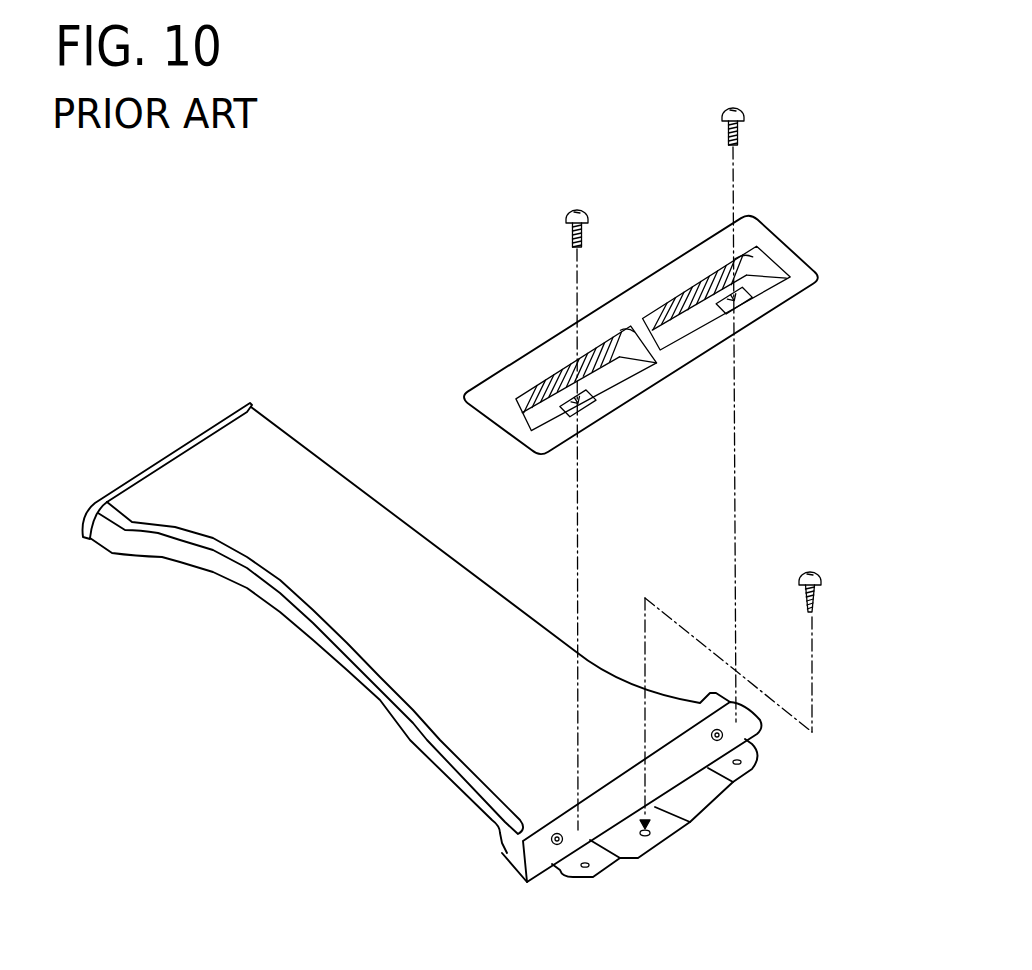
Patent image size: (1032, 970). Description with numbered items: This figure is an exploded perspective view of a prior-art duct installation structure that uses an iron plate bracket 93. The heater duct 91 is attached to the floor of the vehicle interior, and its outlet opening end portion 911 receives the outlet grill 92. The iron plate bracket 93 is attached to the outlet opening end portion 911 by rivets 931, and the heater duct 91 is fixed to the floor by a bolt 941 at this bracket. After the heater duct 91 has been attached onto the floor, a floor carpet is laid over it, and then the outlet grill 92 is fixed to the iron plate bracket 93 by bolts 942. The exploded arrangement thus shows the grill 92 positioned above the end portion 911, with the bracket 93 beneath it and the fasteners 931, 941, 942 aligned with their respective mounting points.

The heater duct 91 is at (368, 607).
The outlet opening end portion 911 is at (615, 793).
The outlet grill 92 is at (533, 372).
The iron plate bracket 93 is at (697, 802).
The rivets 931 is at (551, 838).
The bolt 941 is at (808, 573).
The bolts 942 is at (573, 209).